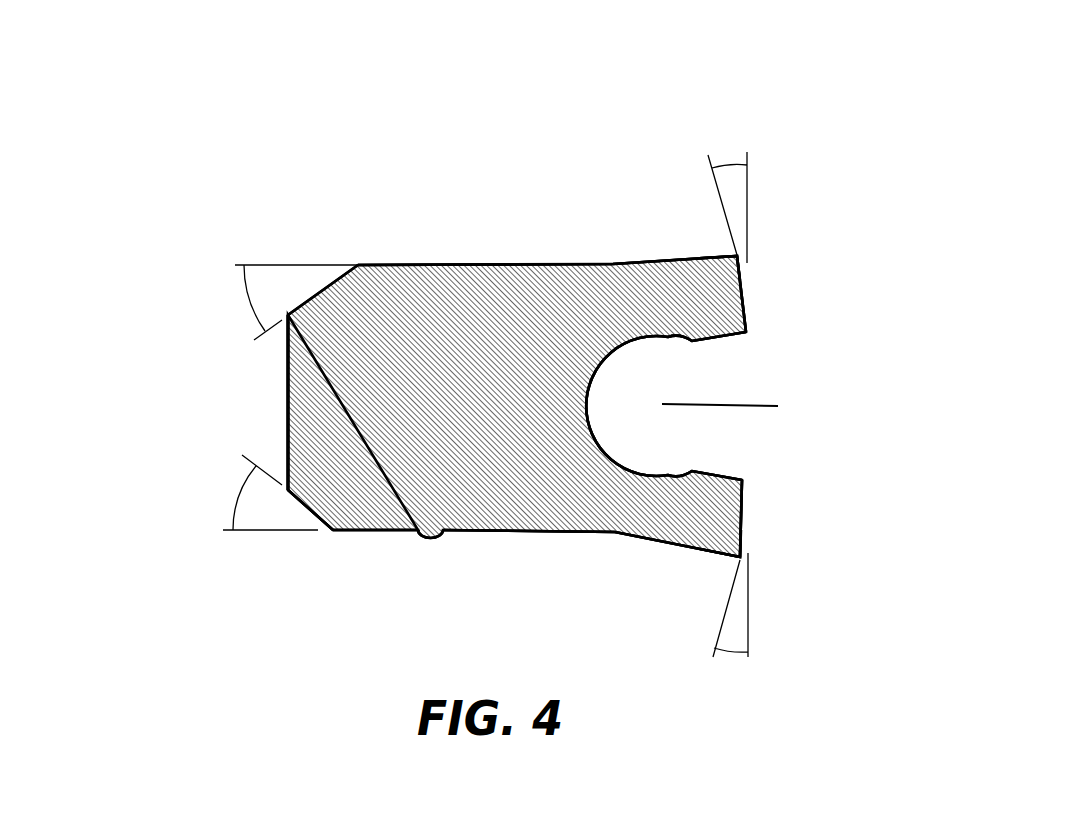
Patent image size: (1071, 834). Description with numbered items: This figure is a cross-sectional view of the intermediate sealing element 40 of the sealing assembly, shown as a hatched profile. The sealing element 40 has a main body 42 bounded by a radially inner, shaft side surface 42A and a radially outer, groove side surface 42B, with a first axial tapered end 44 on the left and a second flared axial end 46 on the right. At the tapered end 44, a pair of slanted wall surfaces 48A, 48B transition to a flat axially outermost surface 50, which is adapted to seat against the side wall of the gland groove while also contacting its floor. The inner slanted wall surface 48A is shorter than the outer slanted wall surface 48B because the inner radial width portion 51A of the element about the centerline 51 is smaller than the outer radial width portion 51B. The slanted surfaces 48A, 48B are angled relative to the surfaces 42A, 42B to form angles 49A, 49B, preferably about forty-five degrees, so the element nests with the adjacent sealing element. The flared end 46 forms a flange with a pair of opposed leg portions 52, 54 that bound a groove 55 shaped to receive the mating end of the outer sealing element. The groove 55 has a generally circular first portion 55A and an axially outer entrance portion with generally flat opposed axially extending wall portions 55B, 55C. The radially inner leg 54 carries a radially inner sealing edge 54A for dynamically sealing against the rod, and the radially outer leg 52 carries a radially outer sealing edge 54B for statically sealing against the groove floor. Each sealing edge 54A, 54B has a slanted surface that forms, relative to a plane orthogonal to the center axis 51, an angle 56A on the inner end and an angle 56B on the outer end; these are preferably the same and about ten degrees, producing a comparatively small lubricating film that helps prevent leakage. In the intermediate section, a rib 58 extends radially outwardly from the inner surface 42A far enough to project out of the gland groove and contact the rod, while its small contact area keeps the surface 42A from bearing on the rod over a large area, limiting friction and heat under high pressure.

The intermediate sealing element 40 is at (607, 147).
The main body 42 is at (378, 262).
The radially inner surface 42A is at (460, 533).
The radially outer surface 42B is at (428, 264).
The first axial tapered end 44 is at (157, 273).
The second flared axial end 46 is at (858, 308).
The inner slanted wall surface 48A is at (298, 530).
The outer slanted wall surface 48B is at (328, 278).
The inner taper angle 49A is at (237, 492).
The outer taper angle 49B is at (252, 303).
The flat axially outermost surface 50 is at (305, 392).
The centerline 51 is at (762, 404).
The inner radial width portion 51A is at (305, 445).
The outer radial width portion 51B is at (308, 337).
The radially outer leg 52 is at (641, 262).
The radially inner leg 54 is at (630, 537).
The radially inner sealing edge 54A is at (707, 553).
The radially outer sealing edge 54B is at (710, 255).
The groove 55 is at (608, 358).
The first groove portion 55A is at (618, 417).
The first flat axially extending wall portion 55B is at (730, 338).
The second flat axially extending wall portion 55C is at (727, 476).
The inner sealing edge angle 56A is at (733, 653).
The outer sealing edge angle 56B is at (728, 166).
The rib 58 is at (420, 538).